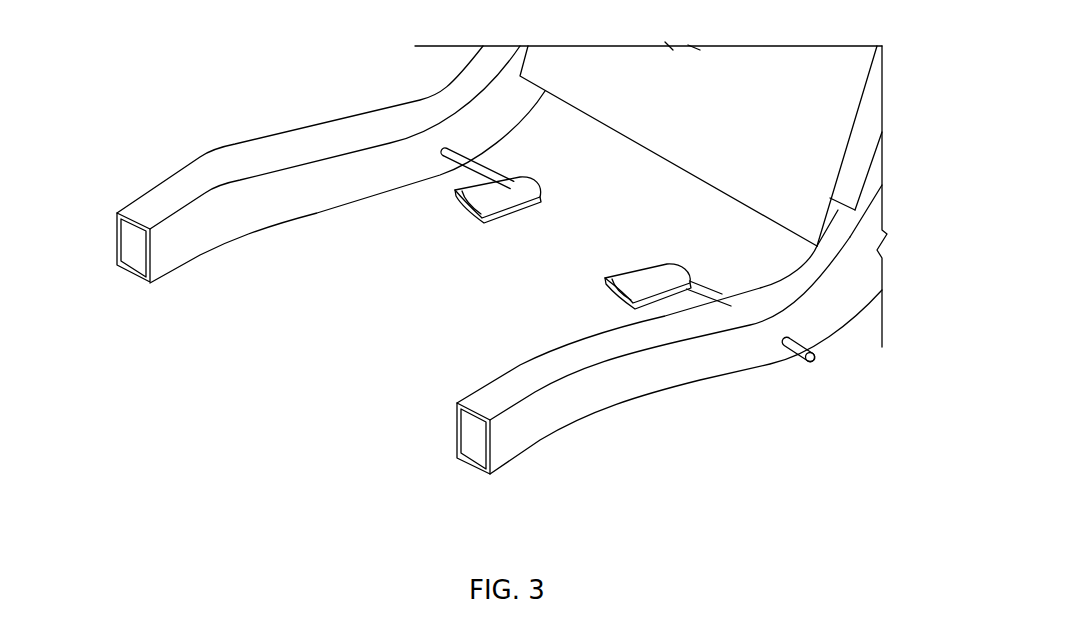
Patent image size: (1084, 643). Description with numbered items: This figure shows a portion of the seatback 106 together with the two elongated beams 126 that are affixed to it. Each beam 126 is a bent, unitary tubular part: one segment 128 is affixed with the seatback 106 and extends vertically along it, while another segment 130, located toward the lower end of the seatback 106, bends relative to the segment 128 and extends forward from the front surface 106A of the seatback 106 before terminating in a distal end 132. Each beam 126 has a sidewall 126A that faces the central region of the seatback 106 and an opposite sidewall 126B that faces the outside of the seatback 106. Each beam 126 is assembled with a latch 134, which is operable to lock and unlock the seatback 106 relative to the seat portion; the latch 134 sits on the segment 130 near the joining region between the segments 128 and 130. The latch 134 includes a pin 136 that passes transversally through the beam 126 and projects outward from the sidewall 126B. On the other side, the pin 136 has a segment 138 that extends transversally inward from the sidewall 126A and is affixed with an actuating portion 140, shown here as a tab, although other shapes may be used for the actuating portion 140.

The seatback 106 is at (881, 98).
The front surface 106A is at (742, 60).
The beam 126 is at (333, 368).
The sidewall 126A is at (223, 212).
The opposite sidewall 126B is at (116, 240).
The segment 128 is at (877, 171).
The segment 130 is at (292, 147).
The distal end 132 is at (170, 263).
The latch 134 is at (555, 237).
The pin 136 is at (814, 361).
The segment 138 is at (485, 173).
The actuating portion 140 is at (633, 278).